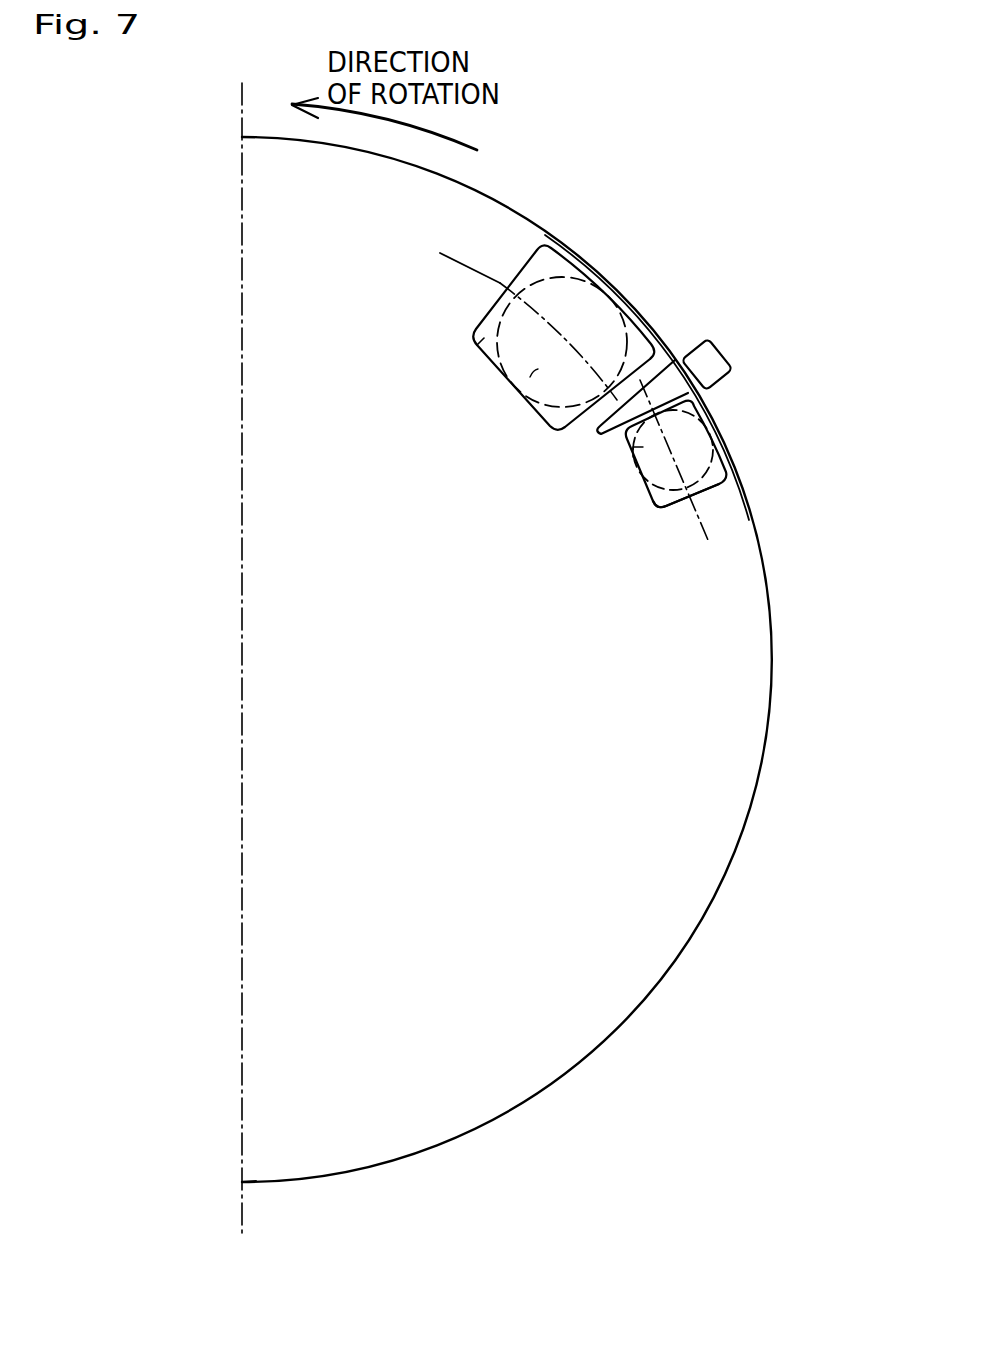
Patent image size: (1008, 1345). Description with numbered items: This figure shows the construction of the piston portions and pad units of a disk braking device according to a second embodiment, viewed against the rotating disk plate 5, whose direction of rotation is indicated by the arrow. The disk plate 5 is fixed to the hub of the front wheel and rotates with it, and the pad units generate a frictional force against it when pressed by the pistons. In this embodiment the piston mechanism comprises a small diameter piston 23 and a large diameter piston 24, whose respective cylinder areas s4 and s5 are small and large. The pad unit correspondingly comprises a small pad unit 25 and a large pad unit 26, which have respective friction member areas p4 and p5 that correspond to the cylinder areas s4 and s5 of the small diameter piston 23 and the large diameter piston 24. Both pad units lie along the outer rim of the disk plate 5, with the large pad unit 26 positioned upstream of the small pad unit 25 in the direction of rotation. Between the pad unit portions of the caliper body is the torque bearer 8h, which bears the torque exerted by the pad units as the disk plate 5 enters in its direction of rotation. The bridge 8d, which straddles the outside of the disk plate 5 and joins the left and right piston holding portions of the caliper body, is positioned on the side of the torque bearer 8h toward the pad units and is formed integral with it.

The disk plate 5 is at (773, 637).
The large diameter piston 24 is at (645, 323).
The large pad unit 26 is at (522, 265).
The cylinder area s5 is at (527, 393).
The friction member area p5 is at (473, 350).
The bridge 8d is at (733, 368).
The torque bearer 8h is at (597, 428).
The small diameter piston 23 is at (707, 461).
The small pad unit 25 is at (715, 488).
The cylinder area s4 is at (627, 453).
The friction member area p4 is at (658, 508).